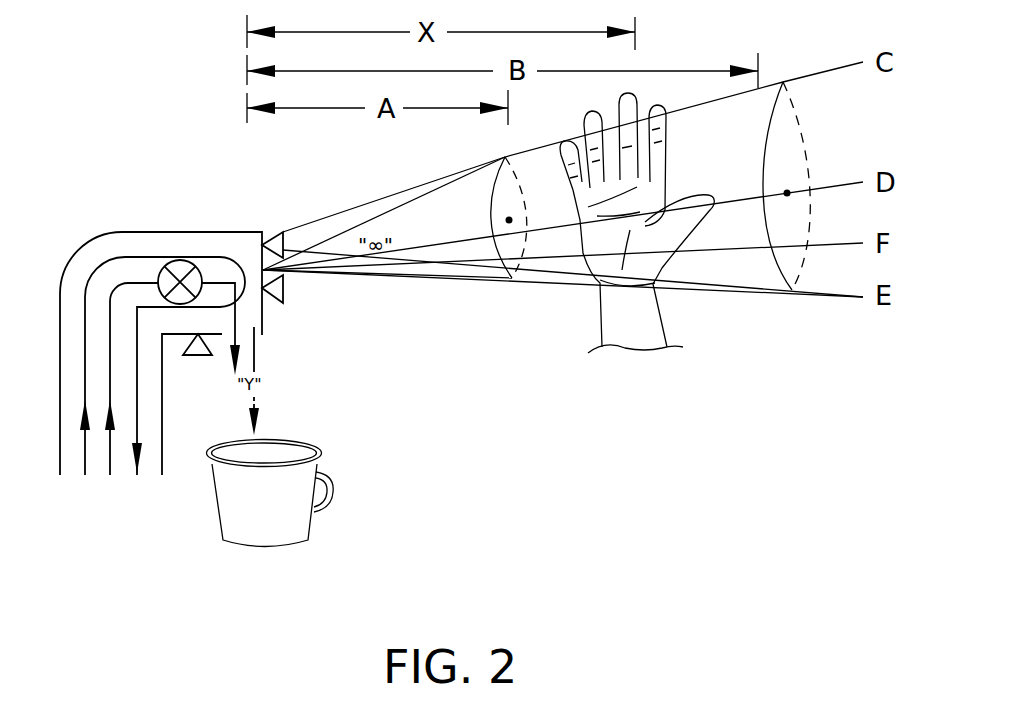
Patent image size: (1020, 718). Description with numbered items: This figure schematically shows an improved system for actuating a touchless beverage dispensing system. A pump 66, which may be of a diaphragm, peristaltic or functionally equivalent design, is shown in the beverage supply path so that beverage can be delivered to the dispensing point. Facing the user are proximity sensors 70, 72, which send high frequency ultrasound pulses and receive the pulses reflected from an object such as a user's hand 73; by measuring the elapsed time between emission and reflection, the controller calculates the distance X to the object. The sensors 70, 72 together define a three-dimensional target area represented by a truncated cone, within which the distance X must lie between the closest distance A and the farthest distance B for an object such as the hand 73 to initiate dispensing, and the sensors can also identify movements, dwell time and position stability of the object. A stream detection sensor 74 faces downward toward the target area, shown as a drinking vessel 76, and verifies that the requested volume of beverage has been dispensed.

The pump 66 is at (180, 260).
The proximity sensor 70 is at (270, 231).
The proximity sensor 72 is at (285, 292).
The hand 73 is at (642, 320).
The stream detection sensor 74 is at (194, 356).
The drinking vessel 76 is at (287, 527).